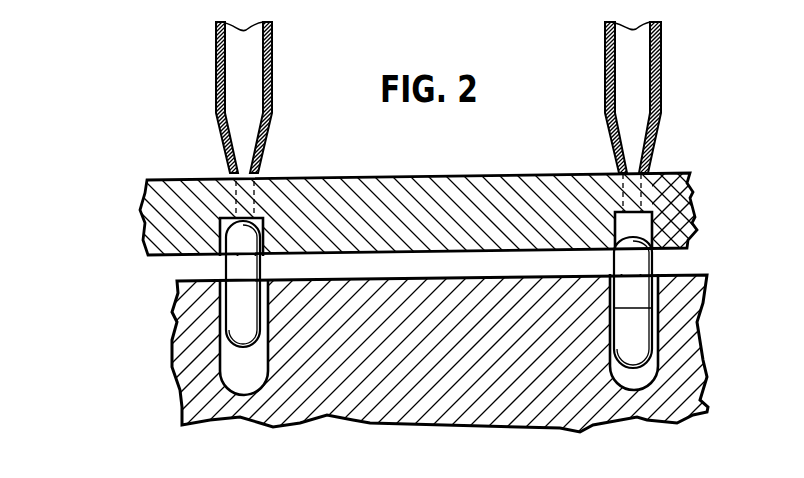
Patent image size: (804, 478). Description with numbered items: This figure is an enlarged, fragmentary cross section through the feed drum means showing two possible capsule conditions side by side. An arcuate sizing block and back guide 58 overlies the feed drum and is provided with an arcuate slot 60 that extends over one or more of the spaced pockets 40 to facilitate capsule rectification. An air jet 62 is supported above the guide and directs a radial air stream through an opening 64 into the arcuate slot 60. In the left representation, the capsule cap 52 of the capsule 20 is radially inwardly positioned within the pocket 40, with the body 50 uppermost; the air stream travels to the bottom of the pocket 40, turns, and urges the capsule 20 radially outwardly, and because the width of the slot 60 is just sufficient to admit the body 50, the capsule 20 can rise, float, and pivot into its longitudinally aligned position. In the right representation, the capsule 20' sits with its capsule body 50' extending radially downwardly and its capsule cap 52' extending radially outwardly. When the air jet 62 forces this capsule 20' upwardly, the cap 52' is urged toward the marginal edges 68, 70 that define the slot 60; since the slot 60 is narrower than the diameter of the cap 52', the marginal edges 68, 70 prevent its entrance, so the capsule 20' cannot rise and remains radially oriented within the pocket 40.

The capsule 20 is at (166, 299).
The capsule 20' is at (703, 298).
The pocket 40 is at (232, 383).
The capsule body 50 is at (312, 243).
The capsule body 50' is at (688, 302).
The capsule cap 52 is at (194, 337).
The capsule cap 52' is at (679, 310).
The sizing block and back guide 58 is at (475, 202).
The arcuate slot 60 is at (263, 220).
The air jet 62 is at (248, 95).
The opening 64 is at (270, 192).
The marginal edge 68 is at (520, 260).
The marginal edge 70 is at (688, 226).